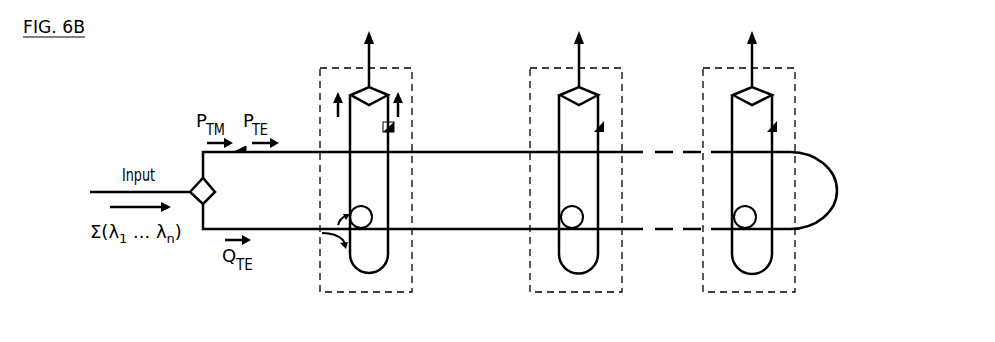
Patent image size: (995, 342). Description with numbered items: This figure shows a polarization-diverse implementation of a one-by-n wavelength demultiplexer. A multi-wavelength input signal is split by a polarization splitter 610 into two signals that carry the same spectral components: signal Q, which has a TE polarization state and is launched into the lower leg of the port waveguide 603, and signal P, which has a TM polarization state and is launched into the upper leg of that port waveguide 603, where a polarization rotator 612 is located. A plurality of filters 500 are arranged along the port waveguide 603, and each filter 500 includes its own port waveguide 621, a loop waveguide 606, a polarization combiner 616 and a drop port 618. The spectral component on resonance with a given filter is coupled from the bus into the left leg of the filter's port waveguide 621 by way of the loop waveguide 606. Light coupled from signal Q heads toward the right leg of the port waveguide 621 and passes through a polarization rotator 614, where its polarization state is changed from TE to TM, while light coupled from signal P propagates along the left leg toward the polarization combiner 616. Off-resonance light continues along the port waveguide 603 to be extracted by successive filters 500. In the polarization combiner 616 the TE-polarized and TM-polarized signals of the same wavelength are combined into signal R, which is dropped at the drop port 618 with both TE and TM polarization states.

The polarization splitter 610 is at (198, 178).
The polarization rotator 612 is at (240, 157).
The port waveguide 603 is at (205, 235).
The filter 500 is at (496, 164).
The polarization combiner 616 is at (352, 95).
The drop port 618 is at (372, 88).
The polarization rotator 614 is at (425, 159).
The loop waveguide 606 is at (365, 230).
The port waveguide 621 is at (354, 271).